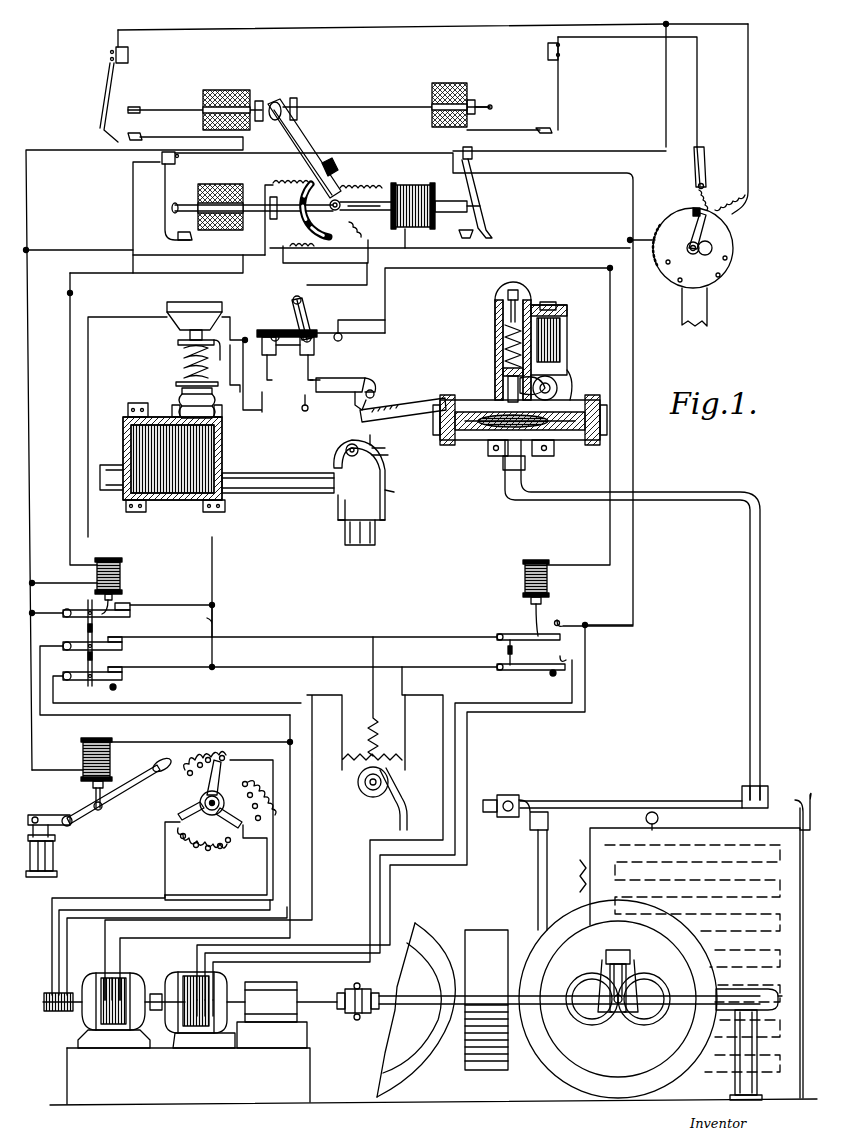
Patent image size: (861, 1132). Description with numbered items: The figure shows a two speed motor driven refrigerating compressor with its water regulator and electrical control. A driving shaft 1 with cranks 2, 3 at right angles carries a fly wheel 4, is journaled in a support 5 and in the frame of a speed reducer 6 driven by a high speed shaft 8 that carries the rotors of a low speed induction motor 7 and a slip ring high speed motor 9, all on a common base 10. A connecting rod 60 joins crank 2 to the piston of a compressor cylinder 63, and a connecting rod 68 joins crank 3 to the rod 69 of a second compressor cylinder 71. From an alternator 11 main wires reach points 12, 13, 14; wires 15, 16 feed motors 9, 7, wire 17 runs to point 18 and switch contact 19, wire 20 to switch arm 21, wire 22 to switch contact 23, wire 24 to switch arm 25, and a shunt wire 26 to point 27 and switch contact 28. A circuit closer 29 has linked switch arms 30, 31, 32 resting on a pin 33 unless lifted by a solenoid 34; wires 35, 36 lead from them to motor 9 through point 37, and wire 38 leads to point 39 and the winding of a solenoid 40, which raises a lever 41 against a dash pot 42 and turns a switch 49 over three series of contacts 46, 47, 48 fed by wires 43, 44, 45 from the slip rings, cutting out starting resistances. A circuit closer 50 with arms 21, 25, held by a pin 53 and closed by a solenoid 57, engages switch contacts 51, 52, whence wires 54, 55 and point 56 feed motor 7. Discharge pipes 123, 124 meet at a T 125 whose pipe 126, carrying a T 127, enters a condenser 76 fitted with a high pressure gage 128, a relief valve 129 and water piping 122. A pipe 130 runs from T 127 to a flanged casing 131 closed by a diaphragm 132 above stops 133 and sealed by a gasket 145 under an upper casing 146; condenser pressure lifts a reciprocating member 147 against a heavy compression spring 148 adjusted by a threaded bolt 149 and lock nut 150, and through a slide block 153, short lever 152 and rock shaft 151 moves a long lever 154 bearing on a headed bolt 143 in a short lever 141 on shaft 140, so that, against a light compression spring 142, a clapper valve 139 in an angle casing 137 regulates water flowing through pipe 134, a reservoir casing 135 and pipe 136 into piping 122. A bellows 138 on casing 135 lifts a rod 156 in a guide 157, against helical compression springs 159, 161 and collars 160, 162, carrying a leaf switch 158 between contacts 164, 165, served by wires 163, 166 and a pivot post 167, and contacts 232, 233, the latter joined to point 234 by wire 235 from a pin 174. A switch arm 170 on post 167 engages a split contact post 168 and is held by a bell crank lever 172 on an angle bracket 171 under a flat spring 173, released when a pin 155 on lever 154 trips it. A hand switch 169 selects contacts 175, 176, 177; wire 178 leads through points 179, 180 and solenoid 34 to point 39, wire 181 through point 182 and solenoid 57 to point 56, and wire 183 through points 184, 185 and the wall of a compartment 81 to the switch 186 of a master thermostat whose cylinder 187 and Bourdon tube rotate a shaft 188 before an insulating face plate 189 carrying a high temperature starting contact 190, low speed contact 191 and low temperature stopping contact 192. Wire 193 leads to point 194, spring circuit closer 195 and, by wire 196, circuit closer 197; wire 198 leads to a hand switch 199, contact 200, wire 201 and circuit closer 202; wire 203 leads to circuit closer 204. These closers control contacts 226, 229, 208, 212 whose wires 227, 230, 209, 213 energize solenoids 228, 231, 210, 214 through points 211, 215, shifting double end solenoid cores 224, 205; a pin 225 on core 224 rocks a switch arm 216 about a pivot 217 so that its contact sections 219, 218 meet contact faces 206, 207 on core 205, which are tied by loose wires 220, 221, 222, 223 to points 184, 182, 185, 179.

The driving shaft 1 is at (386, 995).
The crank 2 is at (350, 988).
The crank 3 is at (598, 968).
The fly wheel 4 is at (482, 934).
The support 5 is at (758, 1050).
The speed reducer 6 is at (278, 990).
The low speed induction motor 7 is at (194, 968).
The high speed shaft 8 is at (160, 992).
The high speed motor 9 is at (84, 1020).
The common base 10 is at (80, 1080).
The alternator 11 is at (382, 798).
The point 12 is at (343, 694).
The point 13 is at (402, 666).
The point 14 is at (373, 636).
The wire 15 is at (314, 822).
The wire 16 is at (370, 884).
The wire 17 is at (310, 666).
The point 18 is at (214, 667).
The switch contact 19 is at (122, 676).
The wire 20 is at (442, 666).
The switch arm 21 is at (504, 671).
The wire 22 is at (303, 636).
The switch contact 23 is at (122, 645).
The wire 24 is at (418, 636).
The switch arm 25 is at (504, 634).
The shunt wire 26 is at (214, 623).
The point 27 is at (214, 605).
The switch contact 28 is at (126, 606).
The circuit closer 29 is at (80, 643).
The switch arm 30 is at (80, 680).
The switch arm 31 is at (76, 649).
The switch arm 32 is at (72, 602).
The pin 33 is at (116, 687).
The solenoid 34 is at (121, 572).
The wire 35 is at (302, 855).
The wire 36 is at (291, 878).
The point 37 is at (286, 740).
The wire 38 is at (52, 771).
The point 39 is at (33, 615).
The solenoid 40 is at (112, 760).
The lever 41 is at (122, 782).
The dash pot 42 is at (54, 854).
The wire 43 is at (52, 918).
The wire 44 is at (59, 940).
The wire 45 is at (67, 960).
The series of contacts 46 is at (196, 850).
The series of contacts 47 is at (262, 790).
The series of contacts 48 is at (200, 758).
The switch 49 is at (198, 806).
The circuit closer 50 is at (508, 652).
The switch contact 51 is at (566, 658).
The switch contact 52 is at (560, 620).
The pin 53 is at (553, 676).
The wire 54 is at (380, 900).
The wire 55 is at (390, 916).
The point 56 is at (588, 628).
The solenoid 57 is at (525, 580).
The connecting rod 60 is at (355, 1020).
The compressor cylinder 63 is at (420, 1068).
The connecting rod 68 is at (626, 978).
The rod 69 is at (618, 1004).
The second compressor cylinder 71 is at (544, 1068).
The condenser 76 is at (622, 840).
The compartment 81 is at (584, 870).
The water piping 122 is at (375, 534).
The discharge pipe 123 is at (490, 814).
The discharge pipe 124 is at (538, 850).
The T 125 is at (510, 796).
The pipe 126 is at (616, 800).
The T 127 is at (744, 788).
The high pressure gage 128 is at (667, 821).
The automatic relief valve 129 is at (804, 796).
The pipe 130 is at (759, 666).
The flanged casing 131 is at (560, 440).
The diaphragm 132 is at (490, 432).
The stops 133 is at (494, 458).
The pipe 134 is at (114, 466).
The reservoir casing 135 is at (222, 462).
The horizontal pipe 136 is at (275, 494).
The angle casing 137 is at (405, 489).
The bellows 138 is at (182, 404).
The clapper valve 139 is at (336, 460).
The shaft 140 is at (358, 442).
The short lever 141 is at (388, 454).
The light compression spring 142 is at (384, 462).
The headed bolt 143 is at (374, 444).
The annular gasket 145 is at (583, 432).
The upper casing 146 is at (496, 344).
The reciprocating member 147 is at (496, 364).
The heavy compression spring 148 is at (496, 327).
The threaded bolt 149 is at (496, 306).
The lock nut 150 is at (500, 292).
The rock shaft 151 is at (560, 388).
The short lever 152 is at (558, 382).
The slide block 153 is at (508, 382).
The long lever 154 is at (438, 406).
The pin 155 is at (372, 413).
The rod 156 is at (172, 375).
The guide 157 is at (178, 346).
The leaf switch 158 is at (196, 327).
The helical compression spring 159 is at (182, 356).
The collar 160 is at (182, 368).
The lighter helical compression spring 161 is at (208, 382).
The collar 162 is at (182, 390).
The wire 163 is at (214, 584).
The contact 164 is at (170, 310).
The contact 165 is at (218, 312).
The wire 166 is at (240, 388).
The pivot post 167 is at (262, 410).
The split contact post 168 is at (290, 348).
The hand switch 169 is at (310, 320).
The switch arm 170 is at (290, 380).
The angle bracket 171 is at (336, 380).
The bell crank lever 172 is at (372, 390).
The flat spring 173 is at (366, 380).
The pin 174 is at (303, 412).
The contact 175 is at (295, 314).
The contact 176 is at (272, 334).
The contact 177 is at (337, 341).
The wire 178 is at (110, 317).
The point 179 is at (68, 295).
The point 180 is at (33, 582).
The wire 181 is at (386, 308).
The point 182 is at (628, 272).
The wire 183 is at (330, 285).
The point 184 is at (346, 255).
The point 185 is at (368, 244).
The switch 186 is at (733, 234).
The short cylinder 187 is at (708, 310).
The shaft 188 is at (700, 252).
The insulating face plate 189 is at (690, 269).
The high temperature starting contact 190 is at (730, 272).
The low speed contact 191 is at (694, 210).
The low temperature stopping contact 192 is at (689, 240).
The wire 193 is at (750, 86).
The point 194 is at (667, 23).
The spring circuit closer 195 is at (110, 82).
The wire 196 is at (667, 96).
The spring circuit closer 197 is at (486, 193).
The wire 198 is at (722, 197).
The hand switch 199 is at (704, 166).
The contact 200 is at (700, 146).
The wire 201 is at (625, 37).
The spring circuit closer 202 is at (560, 88).
The wire 203 is at (640, 173).
The spring circuit closer 204 is at (167, 192).
The double end solenoid core 205 is at (284, 214).
The contact face 206 is at (305, 183).
The contact face 207 is at (309, 254).
The contact 208 is at (192, 240).
The wire 209 is at (112, 255).
The solenoid 210 is at (216, 186).
The point 211 is at (28, 248).
The contact 212 is at (470, 225).
The wire 213 is at (556, 248).
The solenoid 214 is at (428, 176).
The point 215 is at (631, 239).
The switch arm 216 is at (302, 140).
The pivot 217 is at (358, 186).
The contact section 218 is at (328, 216).
The contact section 219 is at (343, 165).
The loose wire 220 is at (352, 235).
The loose wire 221 is at (324, 262).
The loose wire 222 is at (383, 186).
The loose wire 223 is at (72, 274).
The double end solenoid core 224 is at (355, 104).
The pin 225 is at (278, 100).
The contact 226 is at (134, 443).
The wire 227 is at (55, 150).
The solenoid 228 is at (213, 90).
The contact 229 is at (546, 127).
The wire 230 is at (628, 204).
The solenoid 231 is at (446, 84).
The contact 232 is at (178, 340).
The contact 233 is at (226, 354).
The point 234 is at (246, 342).
The wire 235 is at (133, 190).